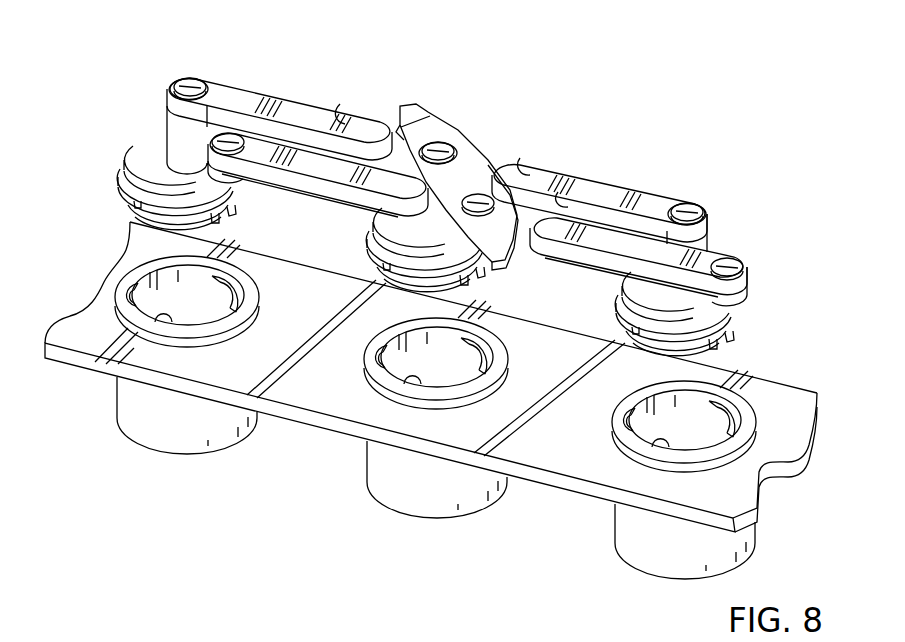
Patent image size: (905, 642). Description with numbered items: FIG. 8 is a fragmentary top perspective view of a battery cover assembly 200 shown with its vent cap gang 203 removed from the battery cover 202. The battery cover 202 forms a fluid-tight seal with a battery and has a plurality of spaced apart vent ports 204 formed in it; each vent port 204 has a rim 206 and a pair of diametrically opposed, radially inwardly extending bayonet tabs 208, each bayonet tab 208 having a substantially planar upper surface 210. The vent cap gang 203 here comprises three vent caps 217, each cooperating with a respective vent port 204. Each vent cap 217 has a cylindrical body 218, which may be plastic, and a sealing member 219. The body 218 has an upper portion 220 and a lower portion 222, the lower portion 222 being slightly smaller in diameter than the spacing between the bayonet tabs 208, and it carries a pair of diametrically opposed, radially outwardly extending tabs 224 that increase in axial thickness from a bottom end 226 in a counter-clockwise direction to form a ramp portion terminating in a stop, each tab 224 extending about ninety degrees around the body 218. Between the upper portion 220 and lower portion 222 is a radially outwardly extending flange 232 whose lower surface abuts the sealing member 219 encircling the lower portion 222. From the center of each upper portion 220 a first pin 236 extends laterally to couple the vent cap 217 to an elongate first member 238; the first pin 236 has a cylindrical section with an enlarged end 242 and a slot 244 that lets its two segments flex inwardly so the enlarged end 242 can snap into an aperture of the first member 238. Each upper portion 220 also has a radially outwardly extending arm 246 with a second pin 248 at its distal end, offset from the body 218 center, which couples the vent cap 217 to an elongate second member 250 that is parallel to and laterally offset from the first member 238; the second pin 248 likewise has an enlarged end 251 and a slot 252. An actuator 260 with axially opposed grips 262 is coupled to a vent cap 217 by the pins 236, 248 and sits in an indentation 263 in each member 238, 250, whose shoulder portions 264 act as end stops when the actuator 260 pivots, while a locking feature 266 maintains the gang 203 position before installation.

The battery cover assembly 200 is at (84, 73).
The battery cover 202 is at (68, 331).
The vent cap gang 203 is at (467, 178).
The vent ports 204 is at (130, 284).
The rim 206 is at (122, 272).
The bayonet tabs 208 is at (240, 302).
The upper surface 210 is at (124, 304).
The vent caps 217 is at (428, 211).
The cylindrical body 218 is at (165, 138).
The sealing member 219 is at (118, 182).
The upper portion 220 is at (142, 140).
The lower portion 222 is at (145, 212).
The tabs 224 is at (234, 216).
The bottom end 226 is at (212, 226).
The flange 232 is at (119, 166).
The first pin 236 is at (195, 78).
The first member 238 is at (318, 116).
The enlarged end 242 is at (188, 78).
The slot 244 is at (206, 82).
The arm 246 is at (236, 208).
The second pin 248 is at (224, 136).
The second member 250 is at (619, 213).
The enlarged end 251 is at (240, 178).
The slot 252 is at (255, 150).
The actuator 260 is at (463, 184).
The grips 262 is at (403, 103).
The indentation 263 is at (470, 160).
The shoulder portions 264 is at (340, 112).
The locking feature 266 is at (534, 256).